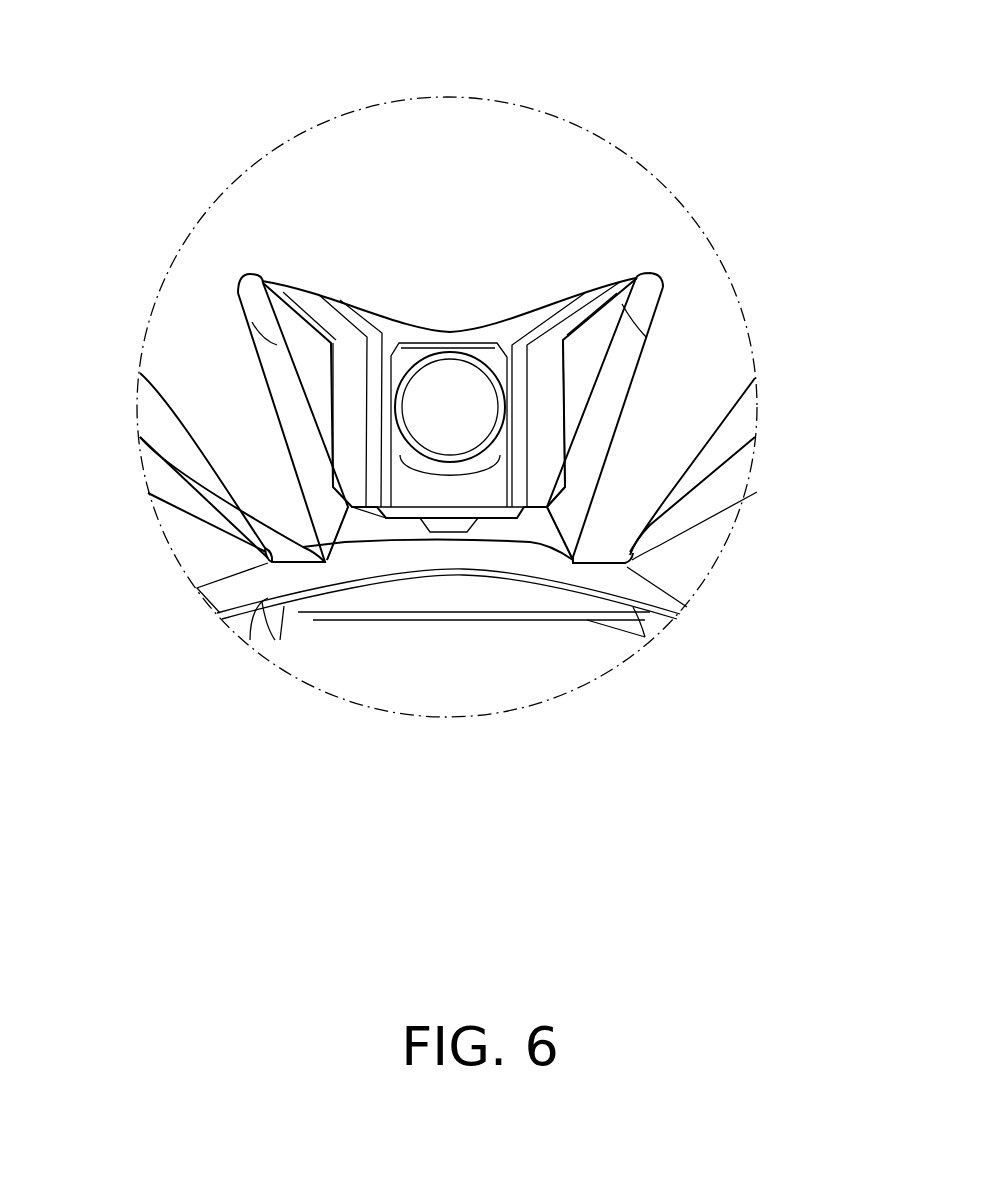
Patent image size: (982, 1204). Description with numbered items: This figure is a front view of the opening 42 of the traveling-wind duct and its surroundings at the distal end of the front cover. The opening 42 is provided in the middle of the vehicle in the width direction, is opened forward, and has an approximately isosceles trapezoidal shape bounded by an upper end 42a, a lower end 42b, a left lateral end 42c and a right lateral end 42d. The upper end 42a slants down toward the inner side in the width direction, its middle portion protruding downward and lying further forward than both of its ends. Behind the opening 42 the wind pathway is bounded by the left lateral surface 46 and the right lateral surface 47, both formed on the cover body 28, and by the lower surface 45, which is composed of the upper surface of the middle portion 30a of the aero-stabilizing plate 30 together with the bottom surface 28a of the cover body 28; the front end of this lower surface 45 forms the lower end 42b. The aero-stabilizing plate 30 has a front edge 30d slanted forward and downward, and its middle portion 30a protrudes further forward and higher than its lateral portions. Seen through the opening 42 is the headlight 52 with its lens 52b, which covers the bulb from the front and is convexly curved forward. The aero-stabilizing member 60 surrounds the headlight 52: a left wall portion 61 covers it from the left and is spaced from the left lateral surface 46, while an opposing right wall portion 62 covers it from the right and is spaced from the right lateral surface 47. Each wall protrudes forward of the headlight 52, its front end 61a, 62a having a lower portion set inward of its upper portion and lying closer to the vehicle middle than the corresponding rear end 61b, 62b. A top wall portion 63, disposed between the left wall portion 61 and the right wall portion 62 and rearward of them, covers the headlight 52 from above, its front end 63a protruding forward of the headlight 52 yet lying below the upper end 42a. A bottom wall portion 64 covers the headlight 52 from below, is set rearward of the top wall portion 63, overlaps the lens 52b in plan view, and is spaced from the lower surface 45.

The cover body 28 is at (200, 285).
The bottom surface 28a is at (590, 520).
The aero-stabilizing plate 30 is at (348, 588).
The middle portion 30a is at (477, 553).
The front edge 30d is at (598, 587).
The opening 42 is at (324, 576).
The upper end 42a is at (330, 357).
The lower end 42b is at (410, 577).
The left lateral end 42c is at (623, 303).
The right lateral end 42d is at (268, 333).
The lower surface 45 is at (527, 557).
The left lateral surface 46 is at (582, 492).
The right lateral surface 47 is at (310, 475).
The headlight 52 is at (452, 349).
The lens 52b is at (470, 387).
The aero-stabilizing member 60 is at (318, 296).
The left wall portion 61 is at (543, 403).
The front end 61a is at (545, 447).
The rear end 61b is at (565, 365).
The right wall portion 62 is at (360, 403).
The front end 62a is at (383, 440).
The rear end 62b is at (330, 373).
The top wall portion 63 is at (400, 333).
The front end 63a is at (449, 330).
The bottom wall portion 64 is at (317, 503).